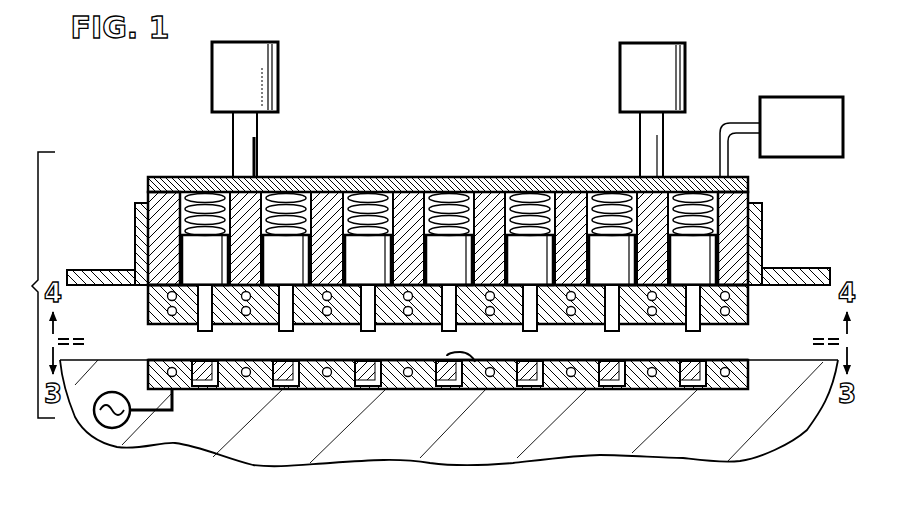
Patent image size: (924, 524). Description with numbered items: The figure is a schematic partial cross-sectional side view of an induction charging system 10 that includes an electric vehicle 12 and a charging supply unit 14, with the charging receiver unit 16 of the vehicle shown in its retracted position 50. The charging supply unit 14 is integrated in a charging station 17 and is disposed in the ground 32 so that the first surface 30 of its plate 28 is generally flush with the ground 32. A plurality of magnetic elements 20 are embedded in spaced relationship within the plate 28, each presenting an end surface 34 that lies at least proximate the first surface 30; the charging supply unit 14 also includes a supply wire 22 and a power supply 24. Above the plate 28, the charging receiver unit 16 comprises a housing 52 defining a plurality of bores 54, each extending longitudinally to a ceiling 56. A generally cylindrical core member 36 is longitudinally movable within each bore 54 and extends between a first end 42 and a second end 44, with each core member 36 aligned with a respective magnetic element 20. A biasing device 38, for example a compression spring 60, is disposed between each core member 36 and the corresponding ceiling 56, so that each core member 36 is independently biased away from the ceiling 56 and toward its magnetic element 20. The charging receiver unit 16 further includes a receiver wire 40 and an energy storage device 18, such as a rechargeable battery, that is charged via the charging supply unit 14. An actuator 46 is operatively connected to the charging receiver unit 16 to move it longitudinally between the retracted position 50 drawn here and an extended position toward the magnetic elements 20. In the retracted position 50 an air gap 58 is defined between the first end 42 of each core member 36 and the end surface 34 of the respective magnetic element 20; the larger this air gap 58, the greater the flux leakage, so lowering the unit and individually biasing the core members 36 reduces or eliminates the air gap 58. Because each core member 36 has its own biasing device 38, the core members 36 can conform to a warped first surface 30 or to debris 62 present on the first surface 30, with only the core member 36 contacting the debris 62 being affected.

The induction charging system 10 is at (30, 285).
The electric vehicle 12 is at (88, 128).
The charging supply unit 14 is at (80, 436).
The charging receiver unit 16 is at (155, 160).
The charging station 17 is at (172, 433).
The energy storage device 18 is at (781, 137).
The magnetic elements 20 is at (287, 386).
The supply wire 22 is at (408, 377).
The power supply 24 is at (98, 436).
The plate 28 is at (718, 385).
The first surface 30 is at (742, 358).
The ground 32 is at (800, 373).
The end surface 34 is at (207, 357).
The core members 36 is at (207, 252).
The biasing devices 38 is at (346, 195).
The receiver wire 40 is at (174, 301).
The first end 42 is at (203, 333).
The second end 44 is at (187, 228).
The actuator 46 is at (247, 52).
The retracted position 50 is at (105, 258).
The housing 52 is at (408, 202).
The bores 54 is at (540, 205).
The ceiling 56 is at (293, 253).
The air gap 58 is at (737, 334).
The compression spring 60 is at (458, 202).
The debris 62 is at (475, 362).